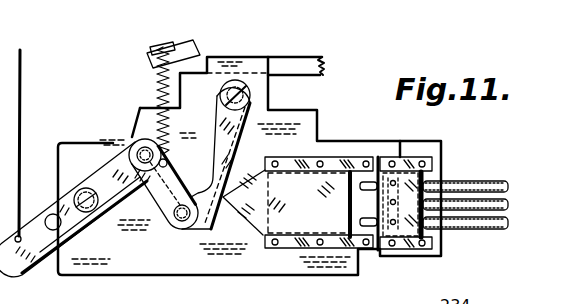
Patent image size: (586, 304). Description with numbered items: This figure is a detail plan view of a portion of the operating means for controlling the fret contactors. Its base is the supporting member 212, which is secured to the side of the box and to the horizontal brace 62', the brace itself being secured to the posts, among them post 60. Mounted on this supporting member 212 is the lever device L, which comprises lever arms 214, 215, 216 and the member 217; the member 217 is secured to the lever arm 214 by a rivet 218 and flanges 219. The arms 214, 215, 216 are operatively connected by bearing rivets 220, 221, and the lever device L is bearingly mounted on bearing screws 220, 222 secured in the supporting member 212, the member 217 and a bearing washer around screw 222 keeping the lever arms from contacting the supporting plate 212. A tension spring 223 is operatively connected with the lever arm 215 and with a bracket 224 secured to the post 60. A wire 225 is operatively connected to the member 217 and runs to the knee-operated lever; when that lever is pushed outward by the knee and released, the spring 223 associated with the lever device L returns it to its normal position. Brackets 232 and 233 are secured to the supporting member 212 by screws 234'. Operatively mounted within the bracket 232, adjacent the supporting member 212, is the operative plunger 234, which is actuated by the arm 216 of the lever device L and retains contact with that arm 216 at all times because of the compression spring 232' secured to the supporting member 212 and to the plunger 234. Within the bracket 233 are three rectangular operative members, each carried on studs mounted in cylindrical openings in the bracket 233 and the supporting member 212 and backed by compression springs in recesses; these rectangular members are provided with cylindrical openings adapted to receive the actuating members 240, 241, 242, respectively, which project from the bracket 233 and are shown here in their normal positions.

The supporting member 212 is at (320, 114).
The horizontal brace 62' is at (301, 53).
The bracket 224 is at (174, 42).
The post 60 is at (200, 44).
The tension spring 223 is at (157, 89).
The lever arm 216 is at (214, 123).
The bearing screw 222 is at (252, 97).
The lever device L is at (212, 156).
The lever arm 214 is at (117, 147).
The member 217 is at (24, 266).
The flanges 219 is at (102, 169).
The rivet 218 is at (58, 212).
The wire 225 is at (43, 146).
The bearing rivet 220 is at (146, 147).
The lever arm 215 is at (157, 217).
The bearing rivet 221 is at (193, 233).
The operative plunger 234 is at (311, 209).
The bracket 232 is at (308, 203).
The compression spring 232' is at (343, 204).
The bracket 233 is at (393, 160).
The screws 234' is at (428, 194).
The actuating member 242 is at (509, 186).
The actuating member 241 is at (513, 204).
The actuating member 240 is at (514, 221).